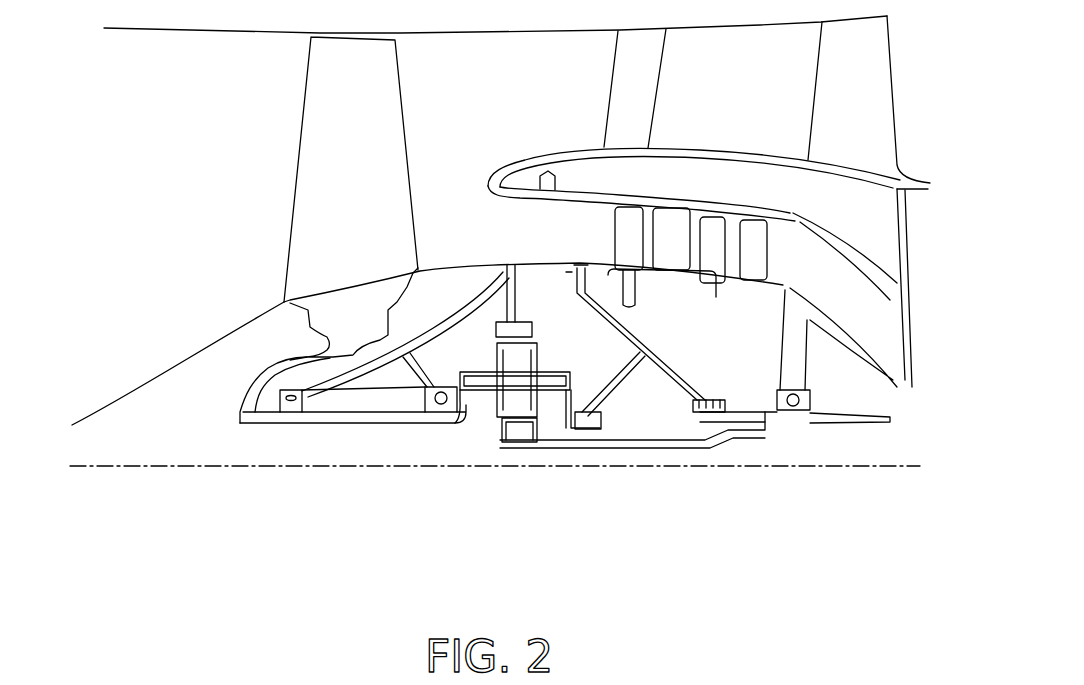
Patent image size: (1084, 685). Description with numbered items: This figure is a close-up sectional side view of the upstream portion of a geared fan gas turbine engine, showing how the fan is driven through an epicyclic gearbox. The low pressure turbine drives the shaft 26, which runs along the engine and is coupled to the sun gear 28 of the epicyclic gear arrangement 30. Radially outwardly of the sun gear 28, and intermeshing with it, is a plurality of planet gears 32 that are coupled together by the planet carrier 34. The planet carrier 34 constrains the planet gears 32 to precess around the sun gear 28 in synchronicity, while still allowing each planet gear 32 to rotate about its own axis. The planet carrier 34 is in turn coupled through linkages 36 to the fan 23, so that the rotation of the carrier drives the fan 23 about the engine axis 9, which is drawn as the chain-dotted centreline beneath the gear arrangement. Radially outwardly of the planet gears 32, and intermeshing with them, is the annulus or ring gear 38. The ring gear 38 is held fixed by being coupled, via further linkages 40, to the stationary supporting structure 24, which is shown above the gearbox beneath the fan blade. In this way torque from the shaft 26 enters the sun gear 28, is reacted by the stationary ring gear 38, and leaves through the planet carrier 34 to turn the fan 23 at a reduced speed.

The engine axis 9 is at (272, 466).
The fan 23 is at (315, 172).
The stationary supporting structure 24 is at (525, 227).
The shaft 26 is at (673, 443).
The sun gear 28 is at (518, 432).
The epicyclic gear arrangement 30 is at (463, 442).
The planet gears 32 is at (497, 410).
The planet carrier 34 is at (562, 418).
The linkages 36 is at (466, 408).
The ring gear 38 is at (497, 332).
The linkages 40 is at (517, 307).